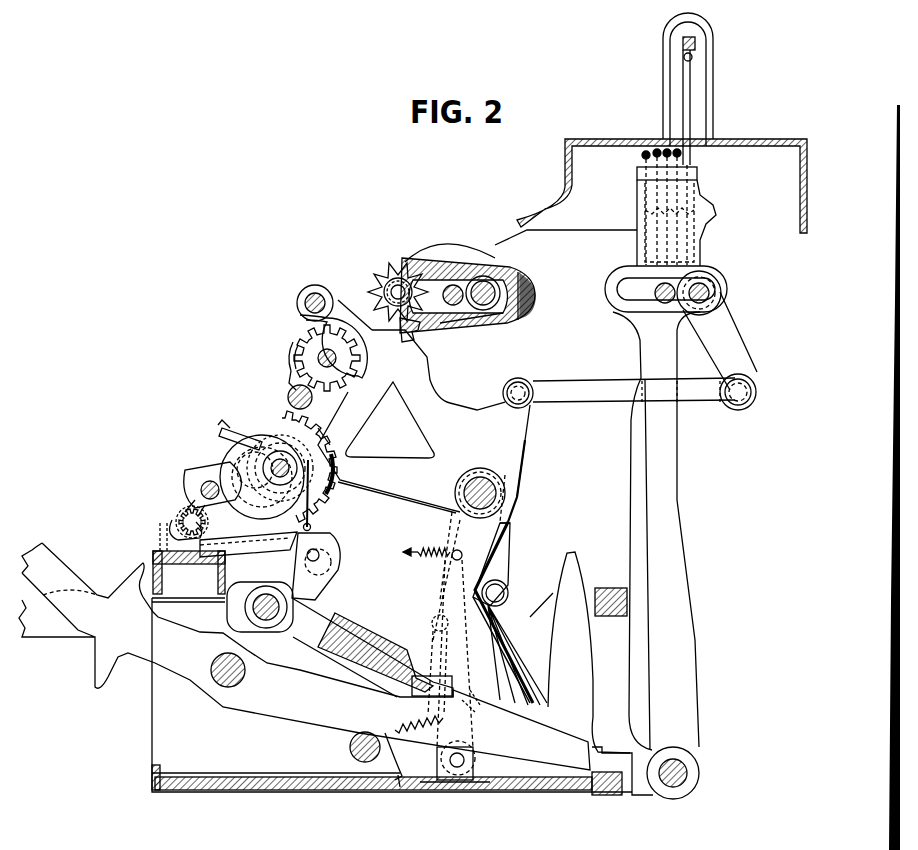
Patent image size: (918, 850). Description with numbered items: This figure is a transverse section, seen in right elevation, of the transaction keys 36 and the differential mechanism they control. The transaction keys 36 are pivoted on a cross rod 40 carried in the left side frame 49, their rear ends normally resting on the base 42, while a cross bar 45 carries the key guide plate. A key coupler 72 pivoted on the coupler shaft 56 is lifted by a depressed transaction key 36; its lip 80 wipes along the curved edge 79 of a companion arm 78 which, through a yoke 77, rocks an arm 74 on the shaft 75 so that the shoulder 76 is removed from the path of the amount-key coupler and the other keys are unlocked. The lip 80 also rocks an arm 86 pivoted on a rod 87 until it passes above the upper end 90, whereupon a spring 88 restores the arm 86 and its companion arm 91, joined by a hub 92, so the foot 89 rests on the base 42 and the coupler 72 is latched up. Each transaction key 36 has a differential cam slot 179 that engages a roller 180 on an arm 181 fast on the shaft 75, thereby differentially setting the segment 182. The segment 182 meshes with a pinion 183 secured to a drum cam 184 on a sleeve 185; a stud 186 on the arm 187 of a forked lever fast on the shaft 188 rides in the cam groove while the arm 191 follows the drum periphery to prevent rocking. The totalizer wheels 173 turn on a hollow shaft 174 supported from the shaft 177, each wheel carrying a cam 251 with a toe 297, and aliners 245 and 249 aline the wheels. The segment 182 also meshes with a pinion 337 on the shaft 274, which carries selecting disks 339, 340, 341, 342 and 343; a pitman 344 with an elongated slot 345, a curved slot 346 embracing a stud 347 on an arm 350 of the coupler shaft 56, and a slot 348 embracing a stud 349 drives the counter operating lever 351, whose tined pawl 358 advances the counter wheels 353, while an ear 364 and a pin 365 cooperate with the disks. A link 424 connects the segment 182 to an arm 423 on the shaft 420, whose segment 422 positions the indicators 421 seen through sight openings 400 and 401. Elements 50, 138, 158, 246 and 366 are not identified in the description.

The transaction keys 36 is at (100, 662).
The cross rod 40 is at (222, 666).
The base 42 is at (452, 790).
The cross bar 45 is at (608, 588).
The left side frame 49 is at (152, 737).
The bracket 50 is at (155, 553).
The coupler shaft 56 is at (267, 622).
The key coupler 72 is at (320, 614).
The arm 74 is at (408, 642).
The shaft 75 is at (470, 480).
The shoulder 76 is at (430, 675).
The yoke 77 is at (518, 500).
The companion arm 78 is at (490, 540).
The curved edge 79 is at (436, 633).
The lip 80 is at (412, 695).
The arm 86 is at (470, 702).
The rod 87 is at (465, 762).
The spring 88 is at (382, 752).
The foot 89 is at (400, 783).
The upper end 90 is at (433, 618).
The arm 91 is at (470, 645).
The hub 92 is at (472, 752).
The stud 138 is at (352, 745).
The pivot shaft 158 is at (688, 773).
The totalizer wheels 173 is at (392, 262).
The hollow shaft 174 is at (386, 284).
The shaft 177 is at (490, 312).
The differential cam slot 179 is at (528, 640).
The roller 180 is at (505, 593).
The arm 181 is at (510, 535).
The segment 182 is at (430, 395).
The pinion 183 is at (298, 350).
The drum cam 184 is at (288, 393).
The sleeve 185 is at (290, 338).
The stud 186 is at (289, 380).
The arm 187 is at (296, 318).
The shaft 188 is at (300, 298).
The arm 191 is at (340, 298).
The aliner 245 is at (475, 262).
The nose 246 is at (535, 296).
The aliner 249 is at (468, 325).
The cam 251 is at (406, 278).
The shaft 274 is at (274, 460).
The toe 297 is at (403, 342).
The pinion 337 is at (289, 452).
The selecting disk 339 is at (319, 428).
The selecting disk 340 is at (332, 450).
The selecting disk 341 is at (336, 478).
The selecting disk 342 is at (346, 500).
The selecting disk 343 is at (248, 539).
The pitman 344 is at (312, 527).
The elongated slot 345 is at (262, 477).
The curved slot 346 is at (320, 555).
The stud 347 is at (330, 565).
The slot 348 is at (172, 524).
The stud 349 is at (180, 518).
The arm 350 is at (310, 585).
The counter operating lever 351 is at (185, 505).
The counter wheels 353 is at (211, 470).
The tined pawl 358 is at (245, 529).
The ear 364 is at (222, 430).
The pin 365 is at (311, 520).
The lever 366 is at (200, 483).
The sight opening 400 is at (663, 100).
The sight opening 401 is at (713, 100).
The shaft 420 is at (710, 293).
The indicators 421 is at (646, 150).
The segment 422 is at (713, 215).
The arm 423 is at (735, 355).
The link 424 is at (558, 392).